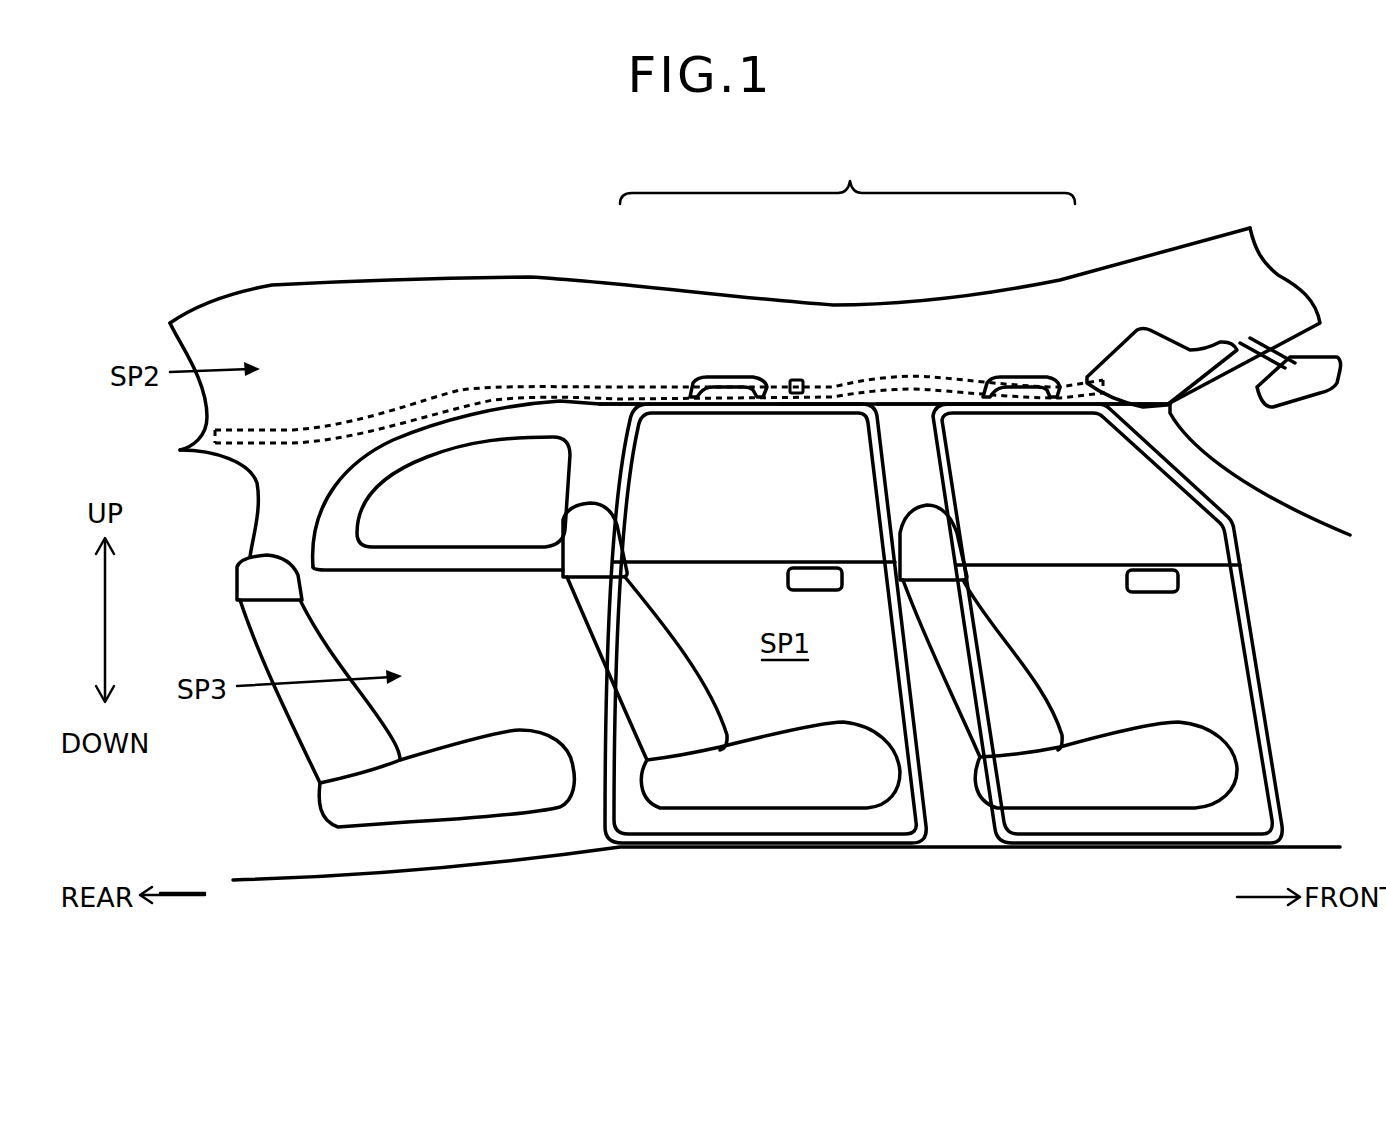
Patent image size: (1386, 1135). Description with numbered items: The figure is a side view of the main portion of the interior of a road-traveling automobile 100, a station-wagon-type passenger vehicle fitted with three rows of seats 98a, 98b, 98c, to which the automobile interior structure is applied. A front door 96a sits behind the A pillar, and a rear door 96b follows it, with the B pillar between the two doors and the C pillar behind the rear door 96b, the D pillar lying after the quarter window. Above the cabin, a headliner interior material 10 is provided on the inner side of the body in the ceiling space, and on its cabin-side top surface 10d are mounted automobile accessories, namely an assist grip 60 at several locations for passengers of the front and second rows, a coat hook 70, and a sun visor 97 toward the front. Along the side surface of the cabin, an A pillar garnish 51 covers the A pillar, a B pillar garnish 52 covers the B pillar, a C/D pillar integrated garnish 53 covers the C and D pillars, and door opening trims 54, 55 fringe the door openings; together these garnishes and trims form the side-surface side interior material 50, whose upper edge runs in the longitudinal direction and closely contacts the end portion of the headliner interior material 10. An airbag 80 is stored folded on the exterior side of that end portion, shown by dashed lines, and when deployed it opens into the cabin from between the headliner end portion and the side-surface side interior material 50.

The headliner interior material 10 is at (1226, 300).
The top surface 10d is at (302, 302).
The automobile 100 is at (1216, 202).
The side-surface side interior material 50 is at (847, 174).
The A pillar garnish 51 is at (1147, 423).
The B pillar garnish 52 is at (893, 413).
The C/D pillar integrated garnish 53 is at (602, 415).
The door opening trim 54 is at (953, 406).
The door opening trim 55 is at (827, 398).
The assist grip 60 is at (727, 373).
The coat hook 70 is at (797, 380).
The airbag 80 is at (540, 385).
The sun visor 97 is at (1150, 343).
The front door 96a is at (1165, 825).
The rear door 96b is at (845, 825).
The front seats 98a is at (1053, 797).
The second row seats 98b is at (693, 797).
The third row seats 98c is at (402, 815).